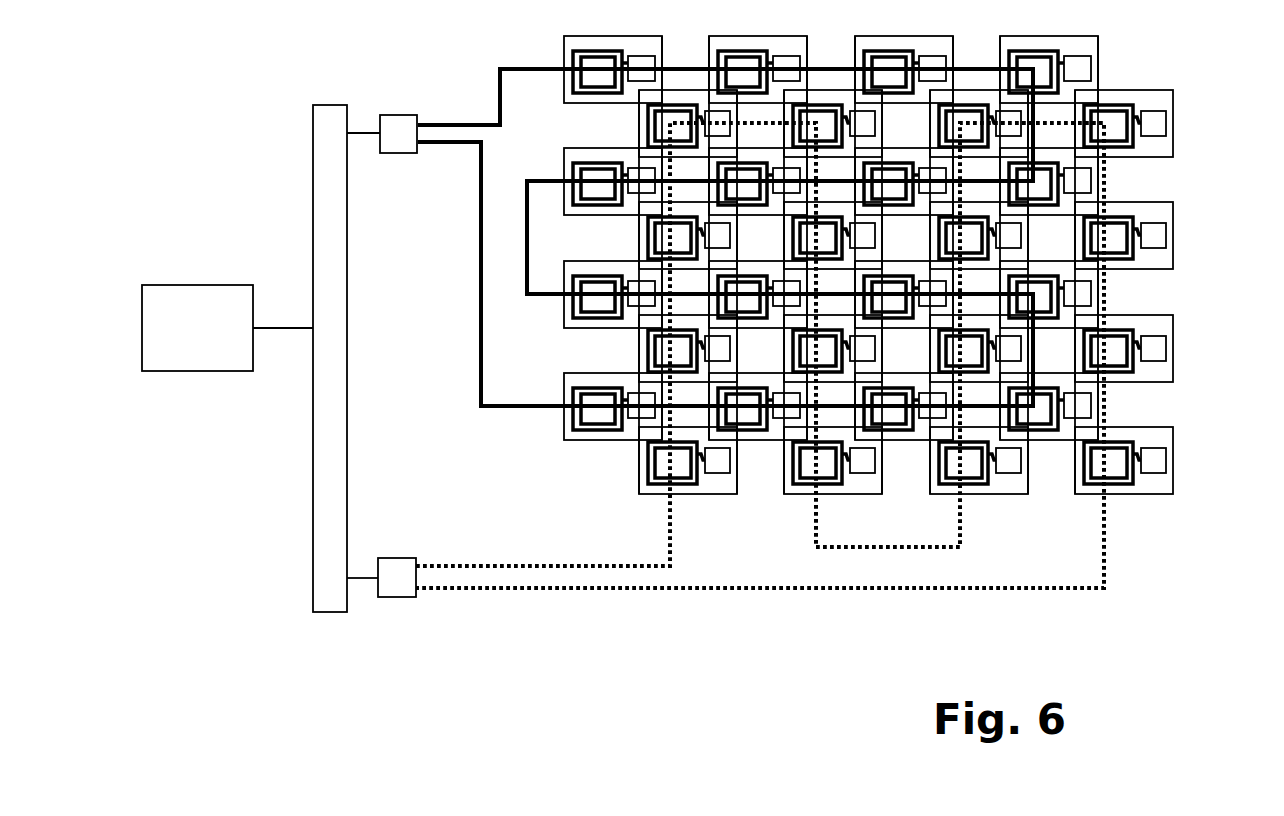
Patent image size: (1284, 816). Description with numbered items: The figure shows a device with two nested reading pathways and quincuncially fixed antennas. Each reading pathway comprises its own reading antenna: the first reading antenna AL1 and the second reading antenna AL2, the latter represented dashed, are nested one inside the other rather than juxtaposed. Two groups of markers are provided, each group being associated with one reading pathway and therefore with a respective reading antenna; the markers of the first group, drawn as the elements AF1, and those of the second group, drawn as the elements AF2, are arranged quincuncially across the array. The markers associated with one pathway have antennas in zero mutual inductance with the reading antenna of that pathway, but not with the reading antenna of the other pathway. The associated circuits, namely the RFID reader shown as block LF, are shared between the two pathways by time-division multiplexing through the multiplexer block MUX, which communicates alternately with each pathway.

The first antenna element / antenna field of first type AF1 is at (1047, 158).
The second antenna element / antenna field of second type AF2 is at (1113, 218).
The first reading antenna AL1 is at (500, 83).
The second reading antenna AL2 is at (545, 563).
The multiplexer MUX is at (313, 239).
The low-frequency unit LF is at (230, 370).